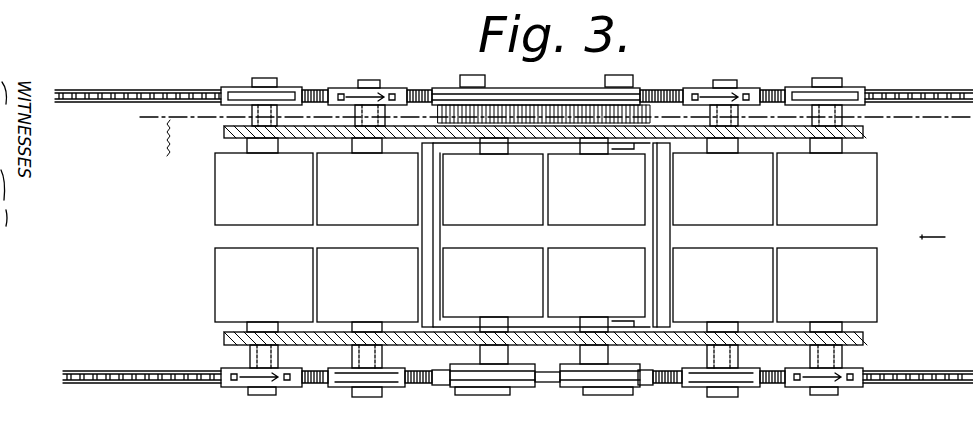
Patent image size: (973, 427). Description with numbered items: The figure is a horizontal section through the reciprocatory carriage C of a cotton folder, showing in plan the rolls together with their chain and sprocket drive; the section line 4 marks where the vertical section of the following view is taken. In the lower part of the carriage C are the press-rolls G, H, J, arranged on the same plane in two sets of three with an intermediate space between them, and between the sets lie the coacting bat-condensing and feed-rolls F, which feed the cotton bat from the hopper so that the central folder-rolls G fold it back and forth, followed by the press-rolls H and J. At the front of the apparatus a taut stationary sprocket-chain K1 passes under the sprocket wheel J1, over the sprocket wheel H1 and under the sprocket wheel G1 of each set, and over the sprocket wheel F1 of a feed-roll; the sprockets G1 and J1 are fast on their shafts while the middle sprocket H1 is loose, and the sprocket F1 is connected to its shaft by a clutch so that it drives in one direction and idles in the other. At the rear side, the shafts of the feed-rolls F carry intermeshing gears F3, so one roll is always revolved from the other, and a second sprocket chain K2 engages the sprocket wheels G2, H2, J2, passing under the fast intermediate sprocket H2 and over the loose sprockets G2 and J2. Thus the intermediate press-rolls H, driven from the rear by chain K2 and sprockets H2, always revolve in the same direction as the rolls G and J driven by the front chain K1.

The reciprocatory carriage C is at (865, 132).
The section line 4— 4 is at (136, 122).
The second sprocket chain K2 is at (132, 92).
The sprocket wheel J2 is at (232, 88).
The sprocket wheel H2 is at (343, 88).
The sprocket wheel G2 is at (432, 88).
The intermeshing gears F3 is at (578, 113).
The press-roll J is at (258, 226).
The press-roll H is at (367, 226).
The central press-roll or folder-roll G is at (442, 226).
The bat-condensing and feed-rolls F is at (492, 226).
The stationary sprocket-chain K1 is at (965, 395).
The sprocket wheel J1 is at (856, 382).
The sprocket wheel H1 is at (748, 396).
The sprocket wheel G1 is at (650, 396).
The sprocket wheel F1 is at (547, 386).